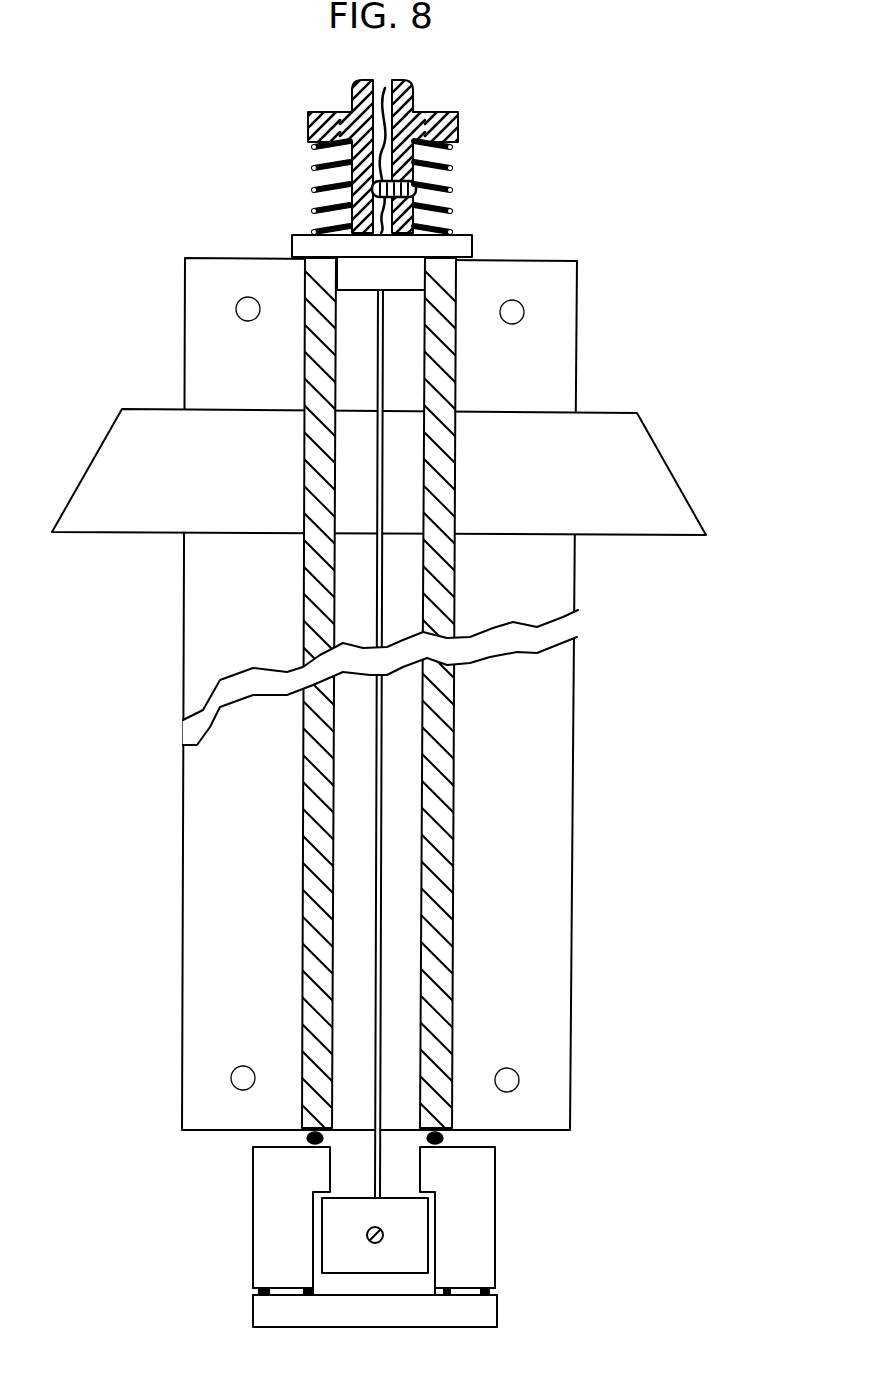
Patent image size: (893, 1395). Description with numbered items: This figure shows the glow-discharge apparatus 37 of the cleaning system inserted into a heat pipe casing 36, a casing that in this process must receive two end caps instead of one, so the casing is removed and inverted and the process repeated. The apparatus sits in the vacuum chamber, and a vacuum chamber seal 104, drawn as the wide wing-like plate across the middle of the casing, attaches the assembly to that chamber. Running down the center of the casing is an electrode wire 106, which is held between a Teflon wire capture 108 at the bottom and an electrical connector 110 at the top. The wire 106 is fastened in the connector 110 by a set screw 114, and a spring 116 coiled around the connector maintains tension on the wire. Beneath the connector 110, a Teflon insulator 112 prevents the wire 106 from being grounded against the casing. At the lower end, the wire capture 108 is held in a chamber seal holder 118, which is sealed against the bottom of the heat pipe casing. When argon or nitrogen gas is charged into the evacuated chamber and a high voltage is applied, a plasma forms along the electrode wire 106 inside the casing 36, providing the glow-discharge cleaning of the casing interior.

The heat pipe casing 36 is at (573, 840).
The glow-discharge apparatus 37 is at (512, 62).
The vacuum chamber seal 104 is at (680, 488).
The electrode wire 106 is at (378, 788).
The Teflon wire capture 108 is at (343, 1275).
The electrical connector 110 is at (413, 100).
The Teflon insulator 112 is at (292, 243).
The set screw 114 is at (453, 178).
The spring 116 is at (312, 167).
The chamber seal holder 118 is at (540, 1236).